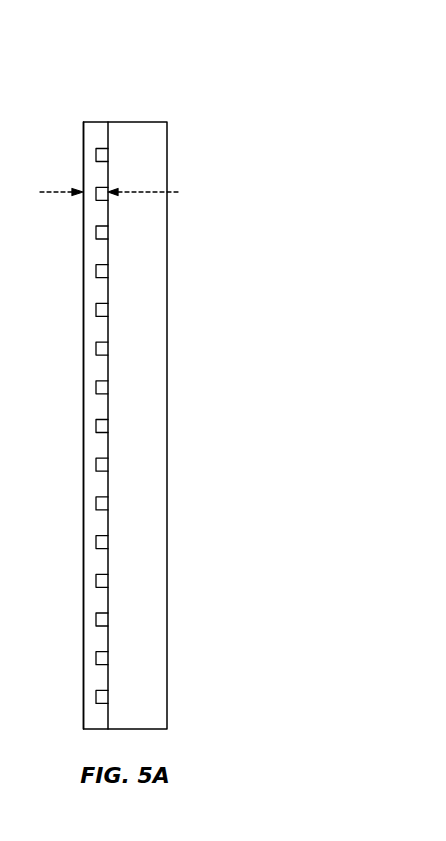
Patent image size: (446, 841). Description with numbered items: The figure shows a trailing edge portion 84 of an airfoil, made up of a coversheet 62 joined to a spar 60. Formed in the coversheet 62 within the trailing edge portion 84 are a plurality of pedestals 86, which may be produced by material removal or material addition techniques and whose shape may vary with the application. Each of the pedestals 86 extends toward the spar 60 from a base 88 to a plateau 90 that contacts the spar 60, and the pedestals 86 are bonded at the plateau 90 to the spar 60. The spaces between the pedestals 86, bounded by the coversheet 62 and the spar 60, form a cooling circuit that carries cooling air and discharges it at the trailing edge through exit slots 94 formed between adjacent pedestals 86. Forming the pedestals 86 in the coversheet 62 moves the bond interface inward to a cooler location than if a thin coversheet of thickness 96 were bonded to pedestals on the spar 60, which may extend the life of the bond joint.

The spar 60 is at (167, 360).
The coversheet 62 is at (83, 133).
The trailing edge portion 84 is at (200, 112).
The pedestals 86 is at (102, 678).
The base 88 is at (100, 387).
The plateau 90 is at (107, 523).
The exit slots 94 is at (102, 310).
The thickness 96 is at (57, 192).